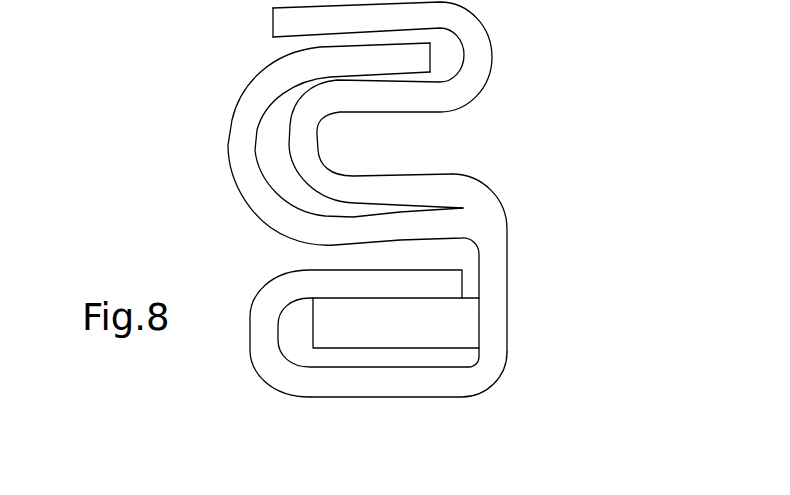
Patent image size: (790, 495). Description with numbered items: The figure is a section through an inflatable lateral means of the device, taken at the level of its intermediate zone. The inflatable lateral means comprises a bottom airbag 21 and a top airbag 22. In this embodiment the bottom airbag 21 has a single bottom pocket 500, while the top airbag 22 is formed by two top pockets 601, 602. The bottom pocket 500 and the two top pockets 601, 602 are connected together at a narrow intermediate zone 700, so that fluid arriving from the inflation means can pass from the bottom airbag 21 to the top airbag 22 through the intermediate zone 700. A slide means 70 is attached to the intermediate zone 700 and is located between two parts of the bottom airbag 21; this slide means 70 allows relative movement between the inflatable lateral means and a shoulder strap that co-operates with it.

The bottom airbag 21 is at (219, 373).
The top airbag 22 is at (541, 11).
The top pocket 601 is at (226, 147).
The top pocket 602 is at (491, 67).
The intermediate zone 700 is at (541, 287).
The bottom pocket 500 is at (273, 424).
The slide means 70 is at (412, 337).